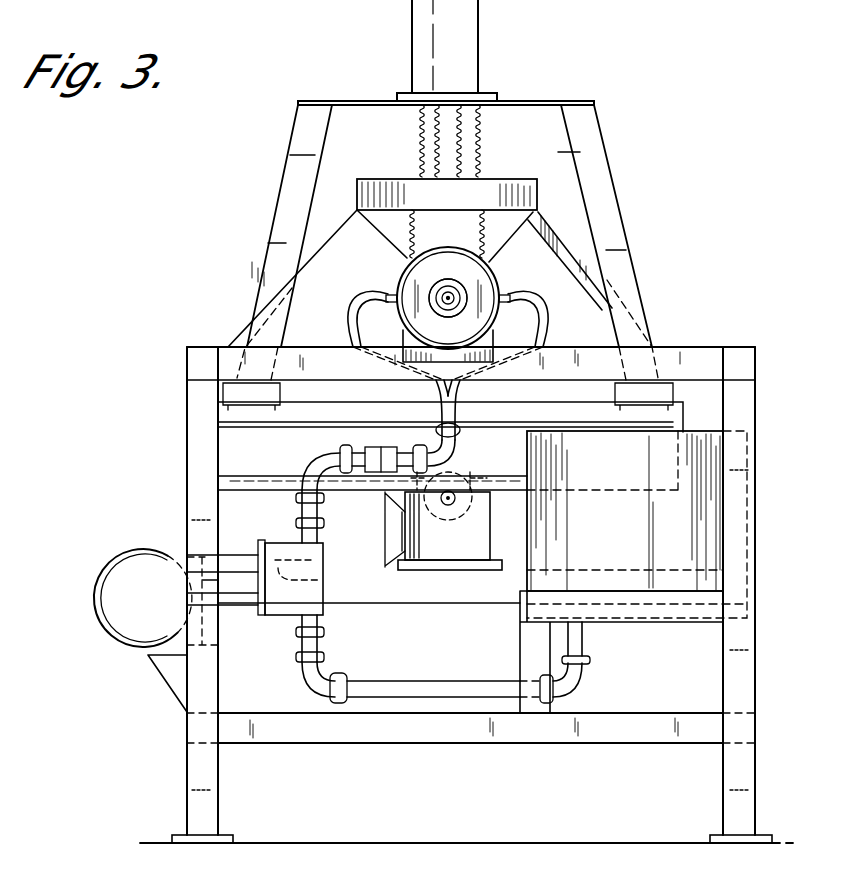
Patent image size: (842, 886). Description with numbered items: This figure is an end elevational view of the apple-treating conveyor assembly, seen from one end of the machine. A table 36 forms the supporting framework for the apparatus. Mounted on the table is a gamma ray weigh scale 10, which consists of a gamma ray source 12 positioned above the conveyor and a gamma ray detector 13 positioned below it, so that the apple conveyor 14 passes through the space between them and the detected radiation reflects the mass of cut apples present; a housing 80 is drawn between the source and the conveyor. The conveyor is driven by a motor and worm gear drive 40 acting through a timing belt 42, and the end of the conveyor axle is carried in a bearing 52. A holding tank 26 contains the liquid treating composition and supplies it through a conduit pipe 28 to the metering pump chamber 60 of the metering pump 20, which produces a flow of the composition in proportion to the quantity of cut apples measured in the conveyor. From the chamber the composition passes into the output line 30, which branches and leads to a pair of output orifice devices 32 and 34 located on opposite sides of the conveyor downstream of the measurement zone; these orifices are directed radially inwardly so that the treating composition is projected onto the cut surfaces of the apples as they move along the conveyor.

The gamma ray weigh scale 10 is at (481, 33).
The gamma ray source 12 is at (417, 24).
The gamma ray detector 13 is at (235, 433).
The apple conveyor 14 is at (401, 273).
The metering pump 20 is at (271, 612).
The holding tank 26 is at (710, 518).
The conduit pipe 28 is at (451, 686).
The output line 30 is at (310, 463).
The output orifice device 32 is at (364, 313).
The output orifice device 34 is at (548, 318).
The table 36 is at (745, 660).
The motor and worm gear drive 40 is at (292, 521).
The timing belt 42 is at (474, 479).
The bearing 52 is at (494, 276).
The metering pump chamber 60 is at (316, 600).
The dust collector box 80 is at (383, 181).